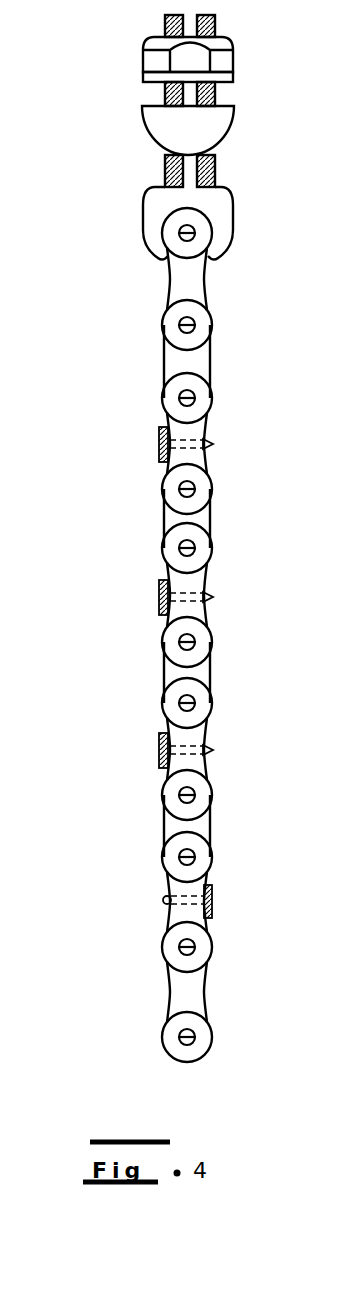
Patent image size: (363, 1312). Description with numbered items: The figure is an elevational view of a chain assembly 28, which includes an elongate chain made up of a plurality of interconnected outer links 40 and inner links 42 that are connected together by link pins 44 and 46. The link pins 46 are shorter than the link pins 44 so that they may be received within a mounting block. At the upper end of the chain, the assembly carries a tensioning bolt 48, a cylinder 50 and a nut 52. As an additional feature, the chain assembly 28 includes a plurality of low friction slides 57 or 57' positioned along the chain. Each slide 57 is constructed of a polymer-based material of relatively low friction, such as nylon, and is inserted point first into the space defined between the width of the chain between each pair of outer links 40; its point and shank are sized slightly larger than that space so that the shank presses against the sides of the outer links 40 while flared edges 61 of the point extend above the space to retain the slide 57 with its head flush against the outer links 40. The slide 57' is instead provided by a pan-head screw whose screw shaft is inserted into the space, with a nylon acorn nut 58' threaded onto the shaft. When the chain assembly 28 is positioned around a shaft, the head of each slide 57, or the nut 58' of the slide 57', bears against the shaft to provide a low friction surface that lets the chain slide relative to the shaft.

The chain assembly 28 is at (183, 635).
The outer links 40 is at (207, 332).
The inner links 42 is at (210, 362).
The link pins 44 is at (165, 641).
The link pins 46 is at (190, 236).
The tensioning bolt 48 is at (162, 168).
The cylinder 50 is at (143, 122).
The nut 52 is at (140, 62).
The low friction slide 57 is at (134, 596).
The low friction slide 57' is at (251, 908).
The nylon acorn nut 58' is at (138, 903).
The flared edges 61 is at (213, 597).